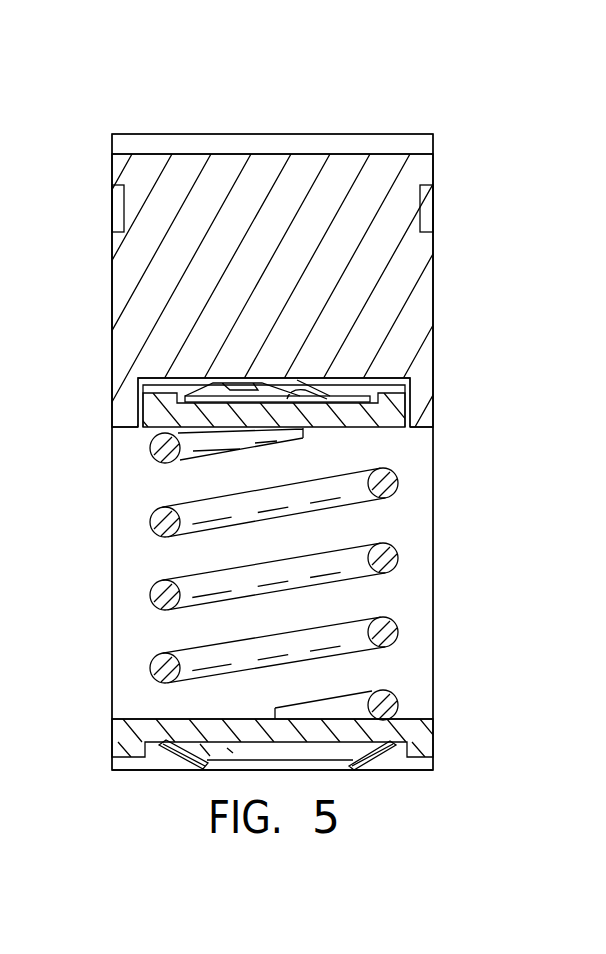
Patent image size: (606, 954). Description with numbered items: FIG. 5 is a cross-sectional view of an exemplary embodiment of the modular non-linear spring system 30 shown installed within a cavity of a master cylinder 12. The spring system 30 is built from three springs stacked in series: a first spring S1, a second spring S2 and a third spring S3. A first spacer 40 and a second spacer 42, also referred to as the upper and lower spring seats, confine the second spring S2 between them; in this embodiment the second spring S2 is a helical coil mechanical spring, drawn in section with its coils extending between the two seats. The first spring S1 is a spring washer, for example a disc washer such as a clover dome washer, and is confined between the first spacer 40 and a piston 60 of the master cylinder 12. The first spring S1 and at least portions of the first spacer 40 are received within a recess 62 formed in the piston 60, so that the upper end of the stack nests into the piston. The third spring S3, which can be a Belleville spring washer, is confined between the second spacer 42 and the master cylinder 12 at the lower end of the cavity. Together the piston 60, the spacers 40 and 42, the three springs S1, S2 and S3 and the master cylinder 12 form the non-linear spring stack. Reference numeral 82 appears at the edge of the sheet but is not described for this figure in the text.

The modular non-linear spring system 30 is at (380, 103).
The master cylinder 12 is at (112, 485).
The piston 60 is at (407, 273).
The recess 62 is at (390, 390).
The first spacer 40 is at (393, 412).
The first spring S1 is at (288, 380).
The second spring S2 is at (151, 524).
The second spacer 42 is at (422, 740).
The third spring S3 is at (163, 746).
The adjacent figure numeral 82 is at (23, 4).